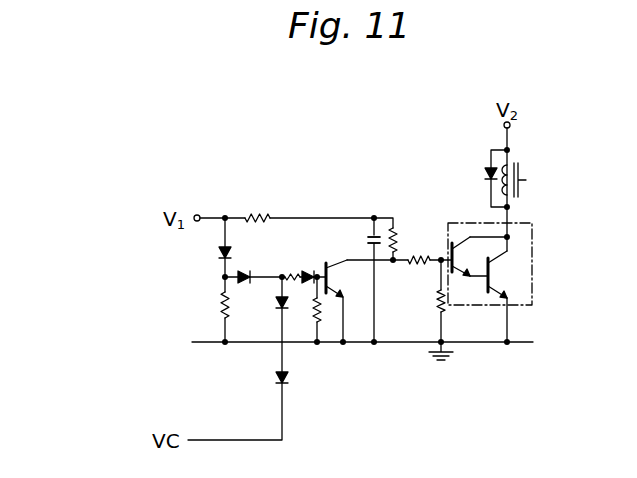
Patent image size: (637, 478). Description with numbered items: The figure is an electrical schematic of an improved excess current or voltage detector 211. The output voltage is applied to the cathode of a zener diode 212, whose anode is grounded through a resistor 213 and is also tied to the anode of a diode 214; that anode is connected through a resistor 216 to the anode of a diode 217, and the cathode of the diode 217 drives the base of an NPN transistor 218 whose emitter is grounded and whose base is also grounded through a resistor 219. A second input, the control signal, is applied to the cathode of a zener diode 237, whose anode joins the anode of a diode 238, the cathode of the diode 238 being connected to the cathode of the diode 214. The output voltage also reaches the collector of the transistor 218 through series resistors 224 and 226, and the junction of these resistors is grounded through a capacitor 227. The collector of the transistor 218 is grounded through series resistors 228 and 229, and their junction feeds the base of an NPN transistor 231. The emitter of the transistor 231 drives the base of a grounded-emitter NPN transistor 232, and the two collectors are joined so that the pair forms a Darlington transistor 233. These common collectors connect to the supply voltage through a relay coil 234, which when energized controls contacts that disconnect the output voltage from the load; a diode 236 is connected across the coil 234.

The excess current or voltage detector 211 is at (132, 285).
The zener diode 212 is at (218, 256).
The resistor 213 is at (220, 301).
The diode 214 is at (245, 268).
The resistor 224 is at (262, 213).
The resistor 216 is at (290, 272).
The diode 217 is at (310, 270).
The NPN transistor 218 is at (346, 295).
The resistor 219 is at (308, 315).
The diode 238 is at (276, 303).
The zener diode 237 is at (290, 378).
The capacitor 227 is at (367, 243).
The resistor 226 is at (394, 227).
The resistor 228 is at (413, 257).
The resistor 229 is at (438, 299).
The NPN transistor 231 is at (462, 254).
The NPN transistor 232 is at (495, 270).
The Darlington transistor 233 is at (534, 292).
The relay coil 234 is at (526, 180).
The diode 236 is at (484, 178).